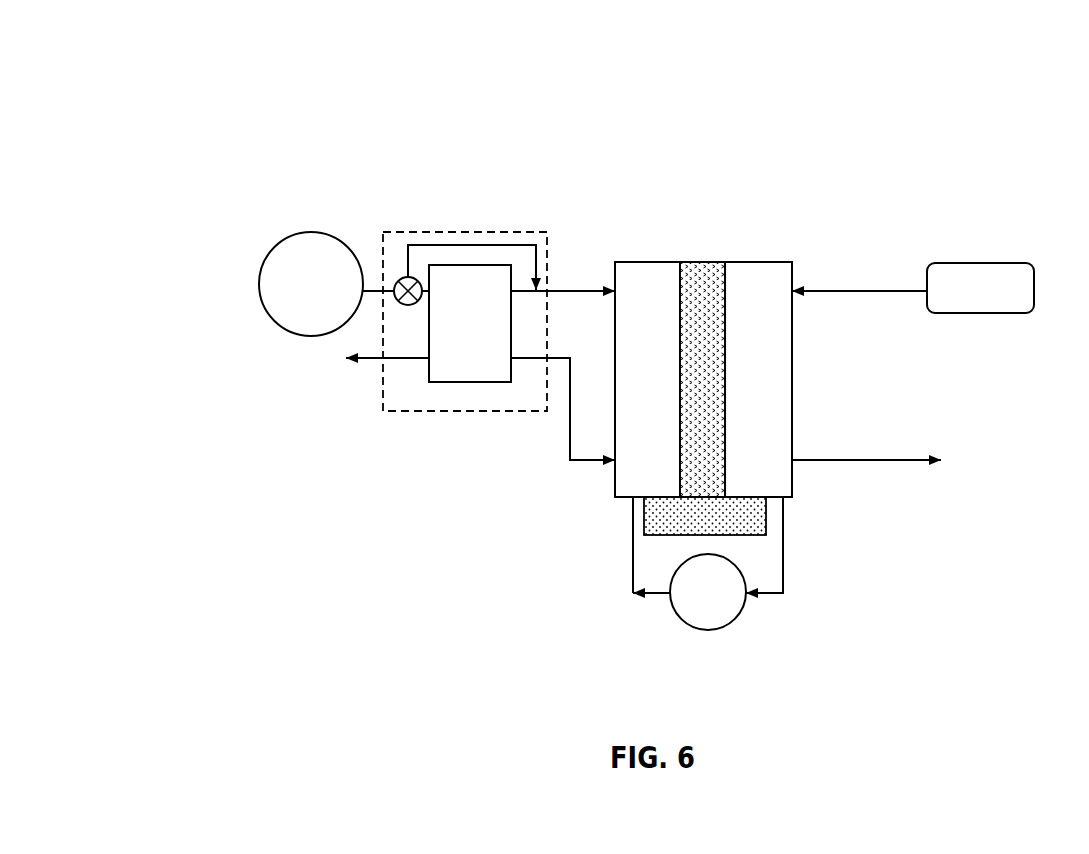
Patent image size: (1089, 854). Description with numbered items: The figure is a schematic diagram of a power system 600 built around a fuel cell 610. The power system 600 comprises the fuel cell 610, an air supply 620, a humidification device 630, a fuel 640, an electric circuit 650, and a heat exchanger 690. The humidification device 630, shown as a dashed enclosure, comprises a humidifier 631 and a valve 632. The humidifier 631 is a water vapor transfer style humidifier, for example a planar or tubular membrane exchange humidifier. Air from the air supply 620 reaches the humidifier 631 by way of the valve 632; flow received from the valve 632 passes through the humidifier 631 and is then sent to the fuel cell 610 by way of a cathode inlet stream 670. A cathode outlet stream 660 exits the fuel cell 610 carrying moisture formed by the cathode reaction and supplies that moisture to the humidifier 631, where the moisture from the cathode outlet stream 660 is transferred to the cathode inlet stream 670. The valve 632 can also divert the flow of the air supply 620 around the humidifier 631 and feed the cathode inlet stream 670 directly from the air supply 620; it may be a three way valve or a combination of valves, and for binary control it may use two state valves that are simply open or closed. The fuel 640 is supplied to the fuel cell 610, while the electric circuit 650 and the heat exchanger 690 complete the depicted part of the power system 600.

The power system 600 is at (282, 93).
The fuel cell 610 is at (689, 243).
The air supply 620 is at (305, 230).
The humidification device 630 is at (467, 230).
The humidifier 631 is at (492, 383).
The valve 632 is at (408, 308).
The fuel 640 is at (976, 257).
The electric circuit 650 is at (767, 618).
The cathode outlet stream 660 is at (590, 462).
The cathode inlet stream 670 is at (570, 288).
The heat exchanger 690 is at (766, 523).